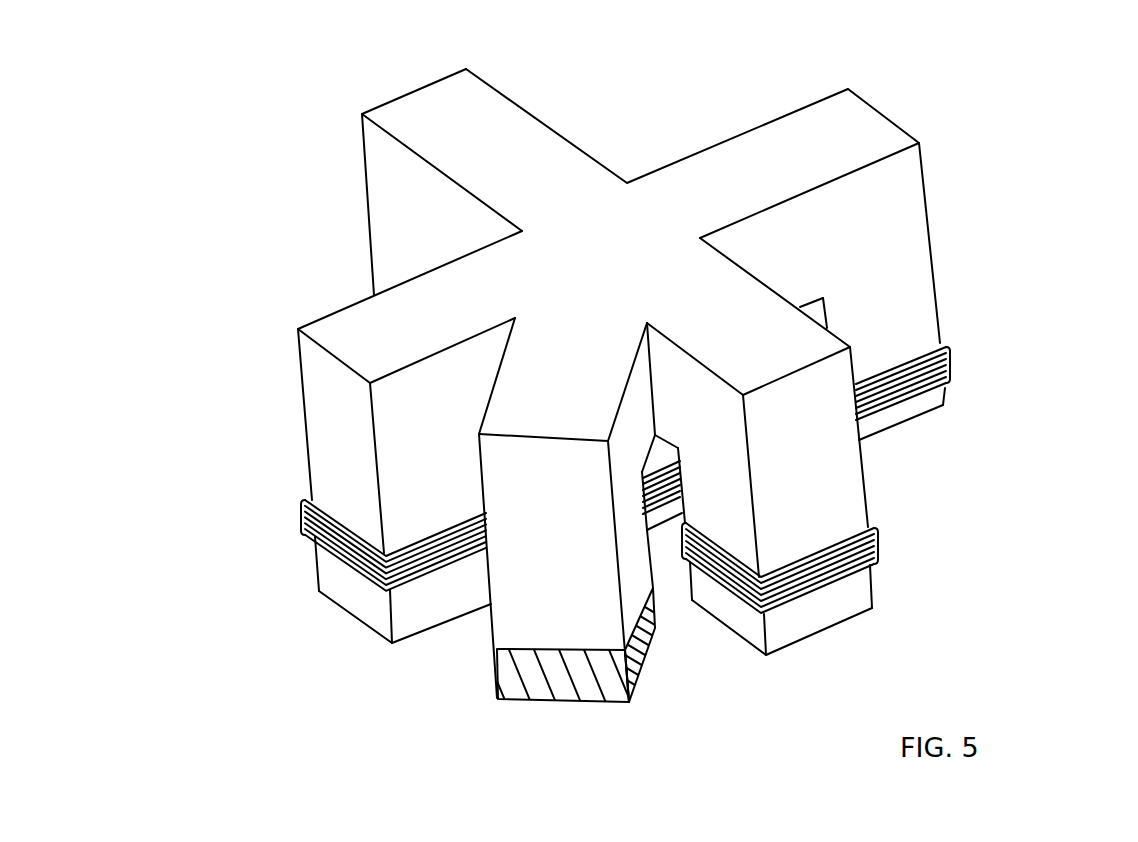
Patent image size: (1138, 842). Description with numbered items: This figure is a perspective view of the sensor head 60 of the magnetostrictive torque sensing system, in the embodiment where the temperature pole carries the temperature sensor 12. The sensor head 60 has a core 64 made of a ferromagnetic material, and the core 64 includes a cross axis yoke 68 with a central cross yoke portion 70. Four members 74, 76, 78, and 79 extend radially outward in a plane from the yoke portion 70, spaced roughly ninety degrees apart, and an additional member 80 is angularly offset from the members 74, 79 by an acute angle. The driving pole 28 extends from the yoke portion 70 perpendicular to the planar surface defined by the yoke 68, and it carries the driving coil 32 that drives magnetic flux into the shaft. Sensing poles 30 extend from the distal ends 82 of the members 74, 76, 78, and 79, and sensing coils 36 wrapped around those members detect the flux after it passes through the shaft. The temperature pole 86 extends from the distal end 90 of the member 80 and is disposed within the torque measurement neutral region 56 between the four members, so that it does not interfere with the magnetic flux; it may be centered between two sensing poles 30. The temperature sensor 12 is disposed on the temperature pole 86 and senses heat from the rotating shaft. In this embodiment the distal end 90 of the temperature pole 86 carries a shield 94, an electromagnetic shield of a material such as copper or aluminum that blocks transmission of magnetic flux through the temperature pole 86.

The temperature sensor 12 is at (552, 705).
The driving pole 28 is at (662, 523).
The sensing poles 30 is at (367, 175).
The driving coil 32 is at (660, 477).
The sensing coils 36 is at (327, 540).
The torque measurement neutral region 56 is at (620, 743).
The sensor head 60 is at (1000, 50).
The core 64 is at (607, 103).
The cross axis yoke 68 is at (623, 210).
The cross yoke portion 70 is at (620, 247).
The member 74 is at (818, 345).
The member 76 is at (807, 127).
The member 78 is at (487, 97).
The member 79 is at (338, 322).
The additional member 80 is at (520, 412).
The distal ends 82 is at (340, 622).
The temperature pole 86 is at (487, 560).
The distal end 90 is at (655, 668).
The shield 94 is at (563, 682).